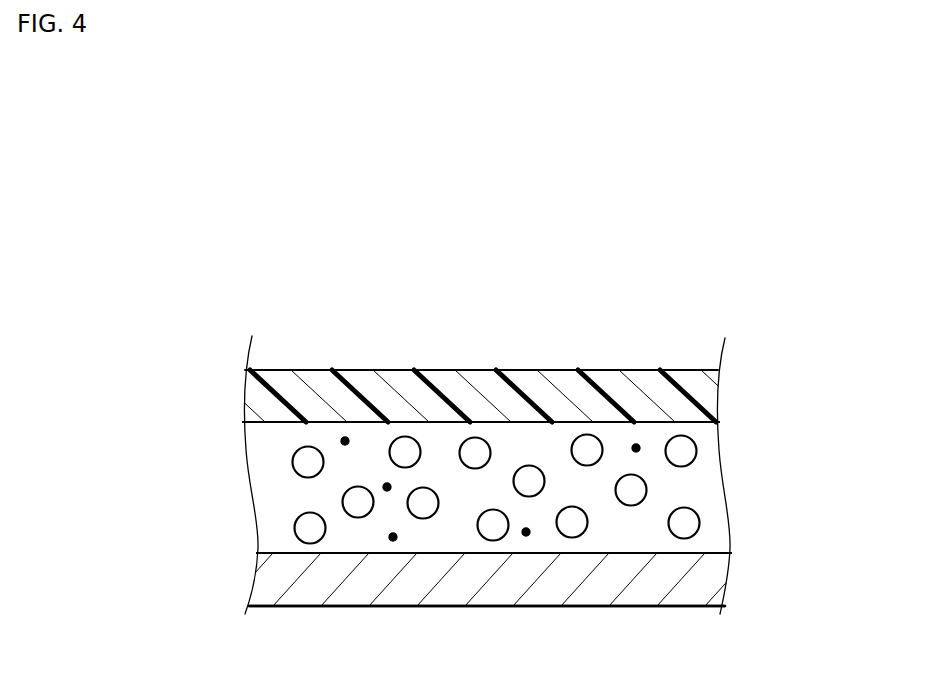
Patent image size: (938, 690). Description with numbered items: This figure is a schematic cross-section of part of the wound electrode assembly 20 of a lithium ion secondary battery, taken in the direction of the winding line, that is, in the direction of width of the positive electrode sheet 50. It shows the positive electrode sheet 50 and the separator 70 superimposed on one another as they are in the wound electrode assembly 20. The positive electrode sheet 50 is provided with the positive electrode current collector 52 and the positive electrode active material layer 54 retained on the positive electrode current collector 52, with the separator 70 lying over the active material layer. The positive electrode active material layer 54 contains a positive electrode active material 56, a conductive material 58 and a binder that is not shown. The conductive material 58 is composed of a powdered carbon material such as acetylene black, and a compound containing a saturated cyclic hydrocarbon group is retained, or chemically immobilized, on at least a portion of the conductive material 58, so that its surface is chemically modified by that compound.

The wound electrode assembly 20 is at (725, 253).
The positive electrode sheet 50 is at (740, 507).
The positive electrode current collector 52 is at (725, 582).
The positive electrode active material layer 54 is at (728, 461).
The positive electrode active material 56 is at (571, 530).
The conductive material 58 is at (393, 540).
The separator 70 is at (704, 400).